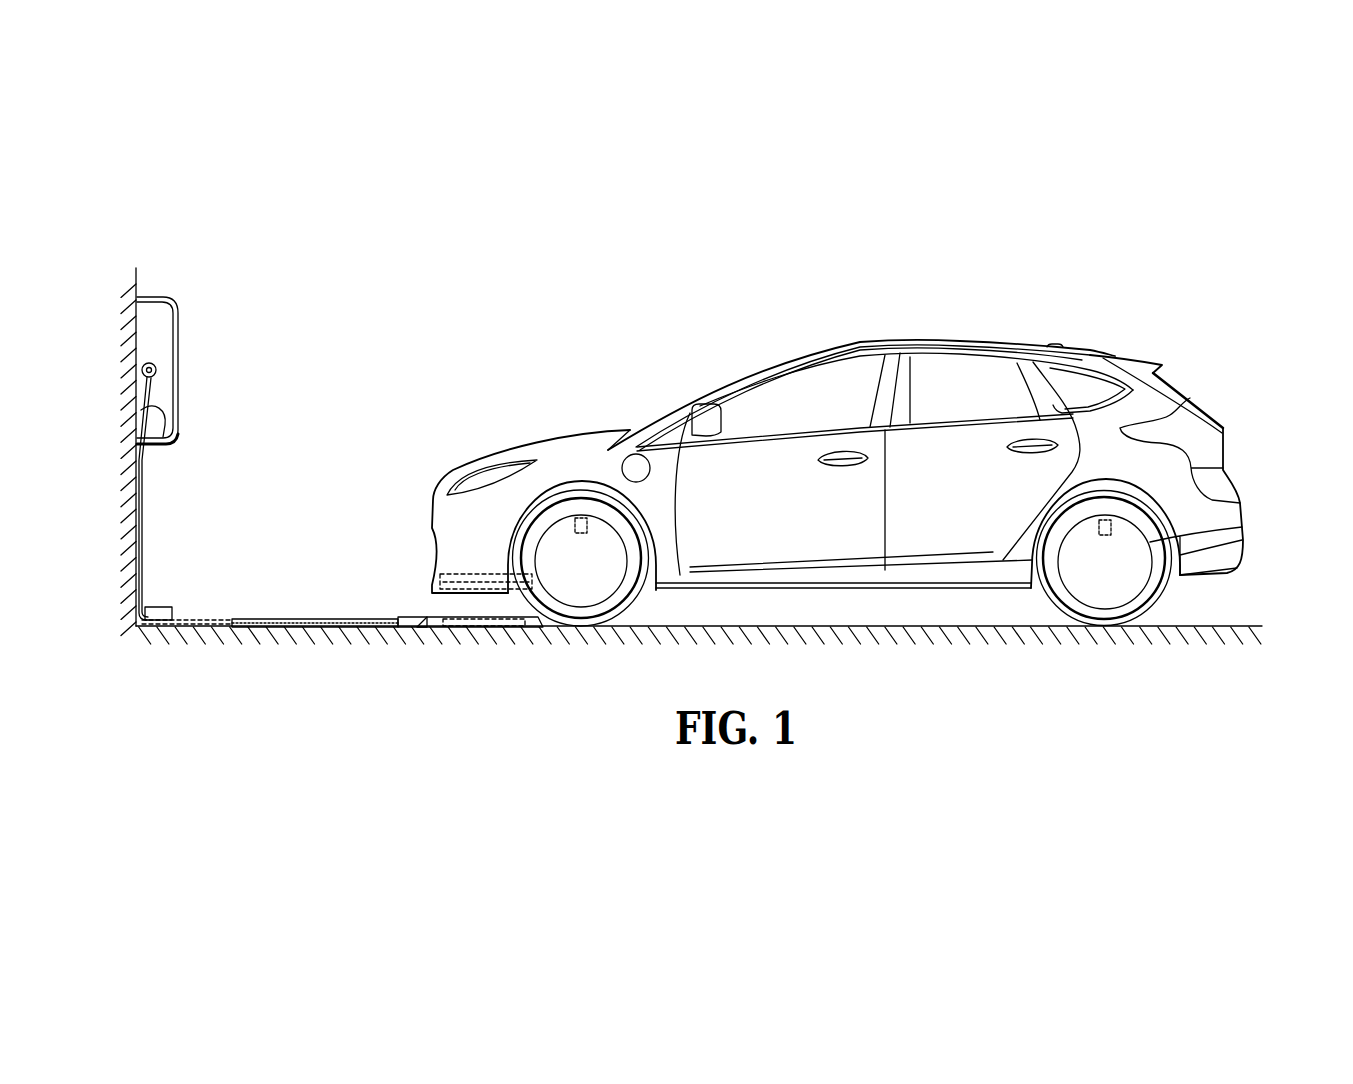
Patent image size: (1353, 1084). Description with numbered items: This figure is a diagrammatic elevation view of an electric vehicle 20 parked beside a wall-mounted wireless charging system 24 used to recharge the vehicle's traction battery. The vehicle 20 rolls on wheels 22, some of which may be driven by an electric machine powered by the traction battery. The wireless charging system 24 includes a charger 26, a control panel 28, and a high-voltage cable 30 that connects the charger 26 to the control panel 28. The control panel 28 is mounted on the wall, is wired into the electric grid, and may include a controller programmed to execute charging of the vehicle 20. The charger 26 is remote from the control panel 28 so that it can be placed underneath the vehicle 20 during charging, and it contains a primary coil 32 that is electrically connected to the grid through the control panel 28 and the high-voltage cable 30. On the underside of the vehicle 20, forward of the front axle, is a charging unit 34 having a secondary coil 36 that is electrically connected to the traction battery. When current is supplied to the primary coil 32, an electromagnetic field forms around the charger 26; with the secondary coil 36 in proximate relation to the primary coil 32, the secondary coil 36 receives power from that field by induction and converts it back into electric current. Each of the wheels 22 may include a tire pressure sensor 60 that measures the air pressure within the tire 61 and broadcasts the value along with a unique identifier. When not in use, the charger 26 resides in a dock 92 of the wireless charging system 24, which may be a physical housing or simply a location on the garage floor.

The electric vehicle 20 is at (817, 439).
The wheels 22 is at (625, 540).
The wireless charging system 24 is at (356, 474).
The charger 26 is at (472, 617).
The control panel 28 is at (177, 323).
The high-voltage cable 30 is at (175, 438).
The primary coil 32 is at (493, 627).
The charging unit 34 is at (468, 574).
The secondary coil 36 is at (430, 585).
The tire pressure sensor 60 is at (582, 518).
The tire 61 is at (1152, 598).
The dock 92 is at (212, 620).